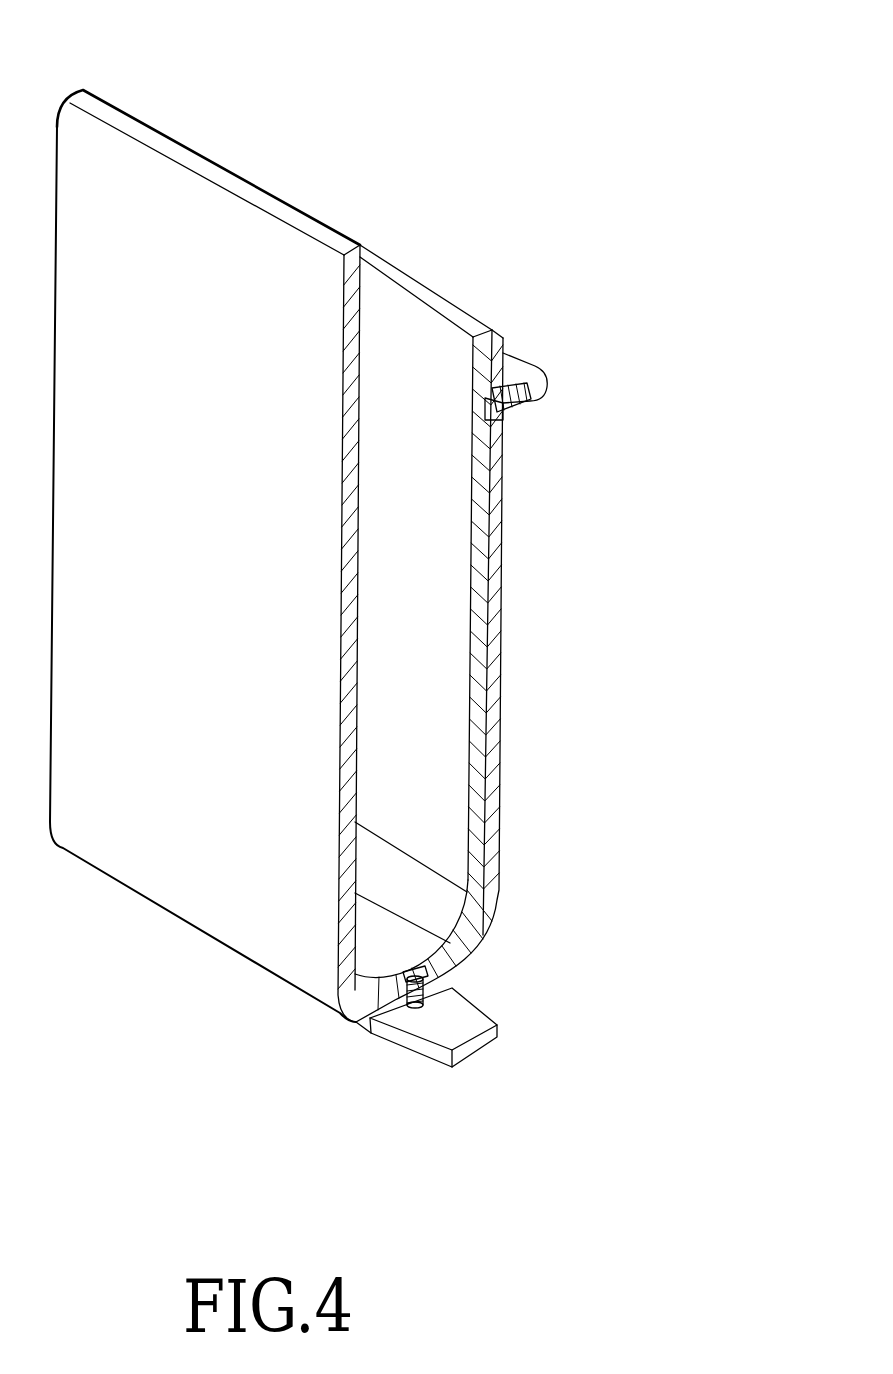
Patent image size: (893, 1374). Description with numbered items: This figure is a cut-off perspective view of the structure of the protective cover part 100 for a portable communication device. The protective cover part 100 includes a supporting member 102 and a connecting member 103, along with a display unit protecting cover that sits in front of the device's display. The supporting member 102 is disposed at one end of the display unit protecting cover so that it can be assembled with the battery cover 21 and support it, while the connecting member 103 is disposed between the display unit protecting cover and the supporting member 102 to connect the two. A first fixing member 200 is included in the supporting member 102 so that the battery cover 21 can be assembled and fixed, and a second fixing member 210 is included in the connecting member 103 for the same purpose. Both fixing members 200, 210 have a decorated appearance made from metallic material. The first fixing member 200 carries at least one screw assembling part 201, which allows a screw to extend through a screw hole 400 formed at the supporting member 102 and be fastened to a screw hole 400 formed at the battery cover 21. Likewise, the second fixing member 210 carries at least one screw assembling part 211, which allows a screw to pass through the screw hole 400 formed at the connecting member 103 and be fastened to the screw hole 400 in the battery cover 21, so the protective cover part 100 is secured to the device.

The protective cover part 100 is at (292, 72).
The battery cover 21 is at (420, 300).
The first fixing member 200 is at (510, 360).
The screw assembling part 201 is at (543, 395).
The screw hole 400 is at (505, 422).
The supporting member 102 is at (493, 632).
The screw assembling part 211 is at (428, 1006).
The second fixing member 210 is at (472, 1047).
The connecting member 103 is at (362, 1022).